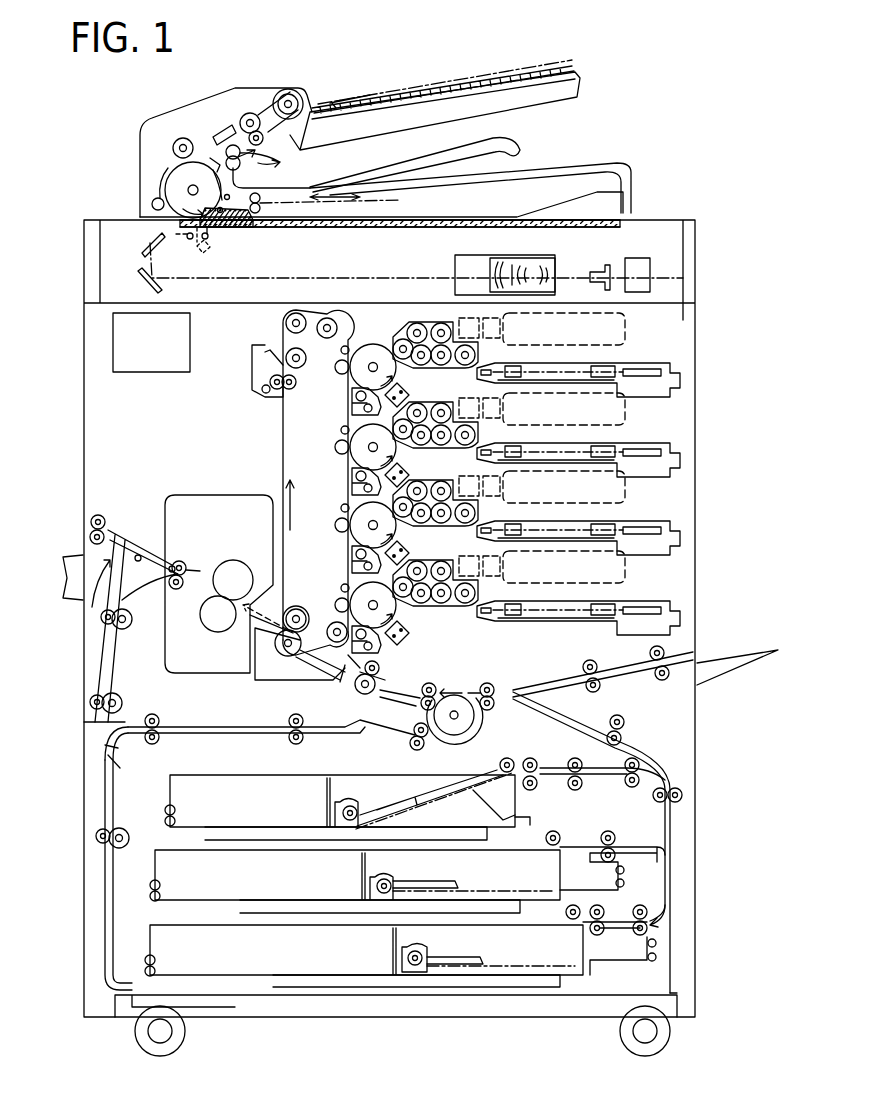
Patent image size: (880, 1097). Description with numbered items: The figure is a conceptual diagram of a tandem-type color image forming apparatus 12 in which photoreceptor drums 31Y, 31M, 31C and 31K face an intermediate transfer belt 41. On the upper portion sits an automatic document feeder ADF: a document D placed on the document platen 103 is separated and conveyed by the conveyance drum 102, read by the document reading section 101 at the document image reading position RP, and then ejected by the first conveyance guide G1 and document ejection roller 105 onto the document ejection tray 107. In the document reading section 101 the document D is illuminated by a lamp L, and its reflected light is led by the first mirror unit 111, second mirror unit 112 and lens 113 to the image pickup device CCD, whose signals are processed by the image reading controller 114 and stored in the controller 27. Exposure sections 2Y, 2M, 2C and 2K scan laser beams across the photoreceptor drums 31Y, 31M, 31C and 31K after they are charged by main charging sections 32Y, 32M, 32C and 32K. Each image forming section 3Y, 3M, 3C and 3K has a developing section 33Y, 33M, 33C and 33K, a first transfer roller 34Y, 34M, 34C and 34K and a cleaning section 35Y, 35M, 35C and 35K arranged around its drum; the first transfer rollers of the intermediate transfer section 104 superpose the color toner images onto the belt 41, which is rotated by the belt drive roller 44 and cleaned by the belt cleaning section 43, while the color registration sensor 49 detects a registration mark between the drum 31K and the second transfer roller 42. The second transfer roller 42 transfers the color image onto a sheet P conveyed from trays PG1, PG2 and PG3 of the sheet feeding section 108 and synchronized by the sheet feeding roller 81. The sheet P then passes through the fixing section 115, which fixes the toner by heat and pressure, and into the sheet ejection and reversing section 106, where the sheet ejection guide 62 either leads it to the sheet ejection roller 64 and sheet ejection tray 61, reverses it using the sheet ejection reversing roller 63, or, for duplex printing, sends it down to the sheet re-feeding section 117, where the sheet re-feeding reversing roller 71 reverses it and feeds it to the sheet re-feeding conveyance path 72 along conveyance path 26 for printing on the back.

The image forming apparatus 12 is at (747, 121).
The automatic document feeder ADF is at (621, 131).
The document reading section 101 is at (671, 267).
The conveyance drum 102 is at (165, 180).
The document platen 103 is at (498, 78).
The document ejection roller 105 is at (266, 163).
The document ejection tray 107 is at (483, 140).
The first mirror unit 111 is at (201, 258).
The second mirror unit 112 is at (140, 268).
The lens 113 is at (503, 256).
The image reading controller 114 is at (645, 282).
The image pickup device CCD is at (611, 266).
The document D is at (440, 82).
The document image reading position RP is at (213, 239).
The first conveyance guide G1 is at (248, 228).
The lamp L is at (198, 256).
The controller 27 is at (165, 354).
The belt cleaning section 43 is at (262, 370).
The intermediate transfer belt 41 is at (283, 425).
The intermediate transfer section 104 is at (272, 451).
The fixing section 115 is at (178, 489).
The photoreceptor drum 31Y is at (367, 346).
The photoreceptor drum 31M is at (355, 437).
The photoreceptor drum 31C is at (355, 516).
The photoreceptor drum 31K is at (355, 595).
The main charging section 32Y is at (404, 386).
The main charging section 32M is at (404, 465).
The main charging section 32C is at (404, 543).
The main charging section 32K is at (406, 623).
The developing section 33Y is at (389, 345).
The developing section 33M is at (448, 413).
The developing section 33C is at (448, 491).
The developing section 33K is at (448, 570).
The first transfer roller 34Y is at (341, 374).
The first transfer roller 34M is at (335, 447).
The first transfer roller 34C is at (335, 525).
The first transfer roller 34K is at (336, 604).
The cleaning section 35Y is at (353, 400).
The cleaning section 35M is at (353, 481).
The cleaning section 35C is at (353, 559).
The cleaning section 35K is at (380, 648).
The image forming section 3Y is at (516, 333).
The image forming section 3M is at (516, 414).
The image forming section 3C is at (516, 494).
The image forming section 3K is at (516, 573).
The exposure section 2Y is at (606, 398).
The exposure section 2M is at (606, 478).
The exposure section 2C is at (606, 556).
The exposure section 2K is at (536, 636).
The sheet ejection tray 61 is at (80, 558).
The sheet ejection guide 62 is at (172, 565).
The sheet ejection roller 64 is at (106, 522).
The discharge conveyance path 26 is at (145, 576).
The sheet ejection and reversing section 106 is at (90, 607).
The sheet ejection reversing roller 63 is at (127, 630).
The belt drive roller 44 is at (320, 657).
The color registration sensor 49 is at (372, 660).
The second transfer roller 42 is at (268, 671).
The sheet re-feeding conveyance path 72 is at (212, 710).
The sheet feeding roller 81 is at (358, 690).
The sheet feeding section 108 is at (684, 757).
The sheet re-feeding section 117 is at (153, 755).
The sheet re-feeding reversing roller 71 is at (125, 852).
The tray PG1 is at (423, 799).
The tray PG2 is at (407, 872).
The tray PG3 is at (405, 946).
The sheet P is at (440, 793).